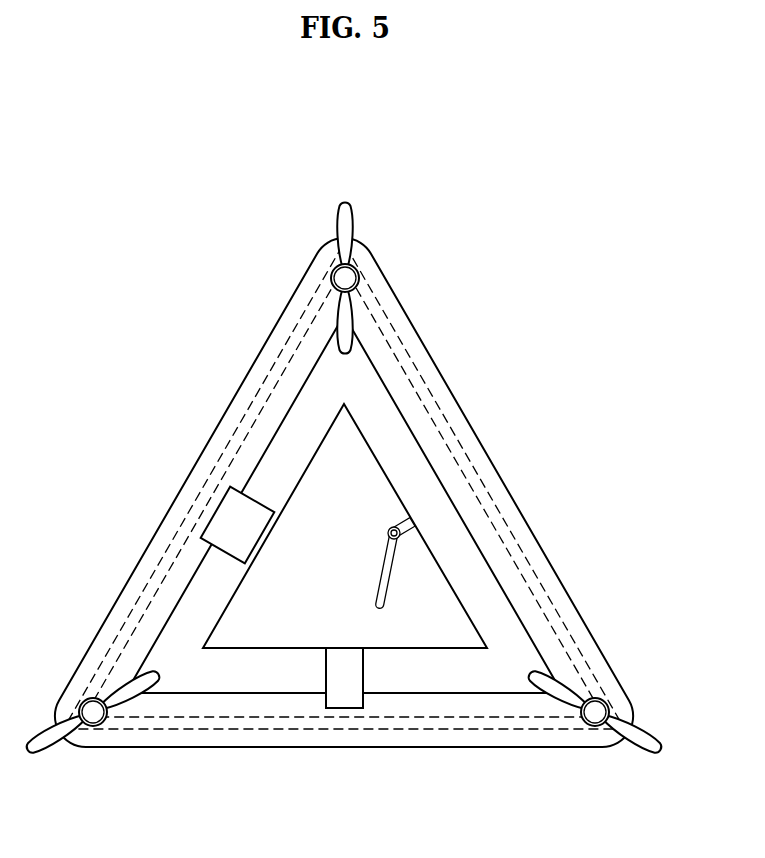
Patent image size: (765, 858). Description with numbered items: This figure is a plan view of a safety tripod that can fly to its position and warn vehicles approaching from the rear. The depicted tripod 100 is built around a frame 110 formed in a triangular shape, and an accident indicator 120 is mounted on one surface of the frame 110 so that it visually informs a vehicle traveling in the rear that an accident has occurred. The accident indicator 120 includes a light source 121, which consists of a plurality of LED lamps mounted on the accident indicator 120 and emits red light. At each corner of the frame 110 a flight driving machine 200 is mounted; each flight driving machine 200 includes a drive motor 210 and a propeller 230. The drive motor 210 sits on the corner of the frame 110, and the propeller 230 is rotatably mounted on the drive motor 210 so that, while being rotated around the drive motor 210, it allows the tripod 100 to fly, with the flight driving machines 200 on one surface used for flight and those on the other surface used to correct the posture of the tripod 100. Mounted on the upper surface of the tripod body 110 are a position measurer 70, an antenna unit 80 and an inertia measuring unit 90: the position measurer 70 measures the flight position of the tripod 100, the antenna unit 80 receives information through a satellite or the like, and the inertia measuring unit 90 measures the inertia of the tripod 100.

The tripod 100 is at (514, 449).
The frame 110 is at (497, 620).
The accident indicator 120 is at (430, 440).
The light source 121 is at (247, 418).
The flight driving machine 200 is at (344, 418).
The drive motor 210 is at (358, 270).
The propeller 230 is at (346, 203).
The position measurer 70 is at (227, 520).
The antenna unit 80 is at (388, 580).
The inertia measuring unit 90 is at (342, 698).